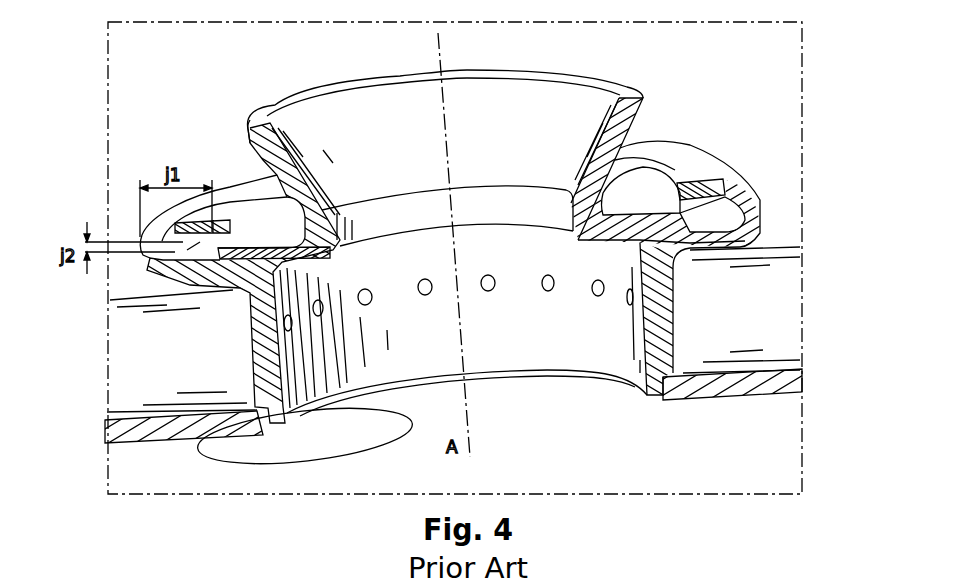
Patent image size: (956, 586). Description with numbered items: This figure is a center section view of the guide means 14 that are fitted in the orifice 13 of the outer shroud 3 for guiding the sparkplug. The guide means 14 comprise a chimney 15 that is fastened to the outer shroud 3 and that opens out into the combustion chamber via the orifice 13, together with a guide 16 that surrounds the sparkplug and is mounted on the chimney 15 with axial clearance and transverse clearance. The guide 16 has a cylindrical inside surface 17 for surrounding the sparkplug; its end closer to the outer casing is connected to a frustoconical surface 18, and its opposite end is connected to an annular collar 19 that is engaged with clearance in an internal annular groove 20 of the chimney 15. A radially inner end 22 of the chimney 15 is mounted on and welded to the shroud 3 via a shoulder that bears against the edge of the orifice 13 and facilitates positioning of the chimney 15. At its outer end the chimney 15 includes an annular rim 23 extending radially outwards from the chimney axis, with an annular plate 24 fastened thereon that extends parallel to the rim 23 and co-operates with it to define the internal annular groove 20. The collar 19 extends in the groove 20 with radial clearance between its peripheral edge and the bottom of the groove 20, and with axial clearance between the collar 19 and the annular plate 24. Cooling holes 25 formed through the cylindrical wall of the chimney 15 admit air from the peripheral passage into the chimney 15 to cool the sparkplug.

The outer shroud 3 is at (458, 370).
The orifice 13 is at (501, 345).
The guide means 14 is at (462, 219).
The chimney 15 is at (653, 322).
The guide 16 is at (265, 125).
The cylindrical inside surface 17 is at (472, 196).
The frustoconical surface 18 is at (527, 105).
The annular collar 19 is at (627, 200).
The internal annular groove 20 is at (730, 205).
The radially inner end 22 is at (688, 360).
The annular rim 23 is at (707, 245).
The annular plate 24 is at (695, 170).
The cooling holes 25 is at (370, 302).